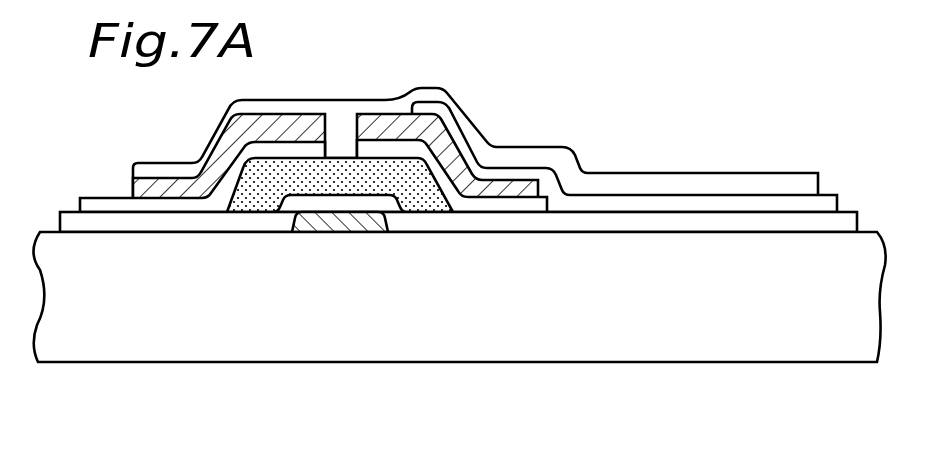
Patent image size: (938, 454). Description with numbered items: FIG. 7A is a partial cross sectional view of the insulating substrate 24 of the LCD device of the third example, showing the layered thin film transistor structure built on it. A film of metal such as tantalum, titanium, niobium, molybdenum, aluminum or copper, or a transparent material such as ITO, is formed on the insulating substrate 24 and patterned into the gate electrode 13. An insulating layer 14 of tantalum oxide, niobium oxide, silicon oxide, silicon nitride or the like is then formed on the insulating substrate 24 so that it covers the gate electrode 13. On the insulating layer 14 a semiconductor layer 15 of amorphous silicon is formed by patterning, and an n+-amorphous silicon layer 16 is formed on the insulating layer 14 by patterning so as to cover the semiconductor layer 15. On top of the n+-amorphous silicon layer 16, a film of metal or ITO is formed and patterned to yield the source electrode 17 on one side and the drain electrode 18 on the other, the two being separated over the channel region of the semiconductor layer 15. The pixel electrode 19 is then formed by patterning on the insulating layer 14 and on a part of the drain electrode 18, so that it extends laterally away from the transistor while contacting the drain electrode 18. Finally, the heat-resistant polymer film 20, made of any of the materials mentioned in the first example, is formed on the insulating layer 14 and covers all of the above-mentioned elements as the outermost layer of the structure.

The gate electrode 13 is at (348, 223).
The insulating layer 14 is at (513, 225).
The semiconductor layer 15 is at (250, 203).
The n+-amorphous silicon layer 16 is at (177, 205).
The source electrode 17 is at (293, 127).
The drain electrode 18 is at (392, 123).
The pixel electrode 19 is at (470, 153).
The heat-resistant polymer film 20 is at (577, 160).
The insulating substrate 24 is at (673, 332).